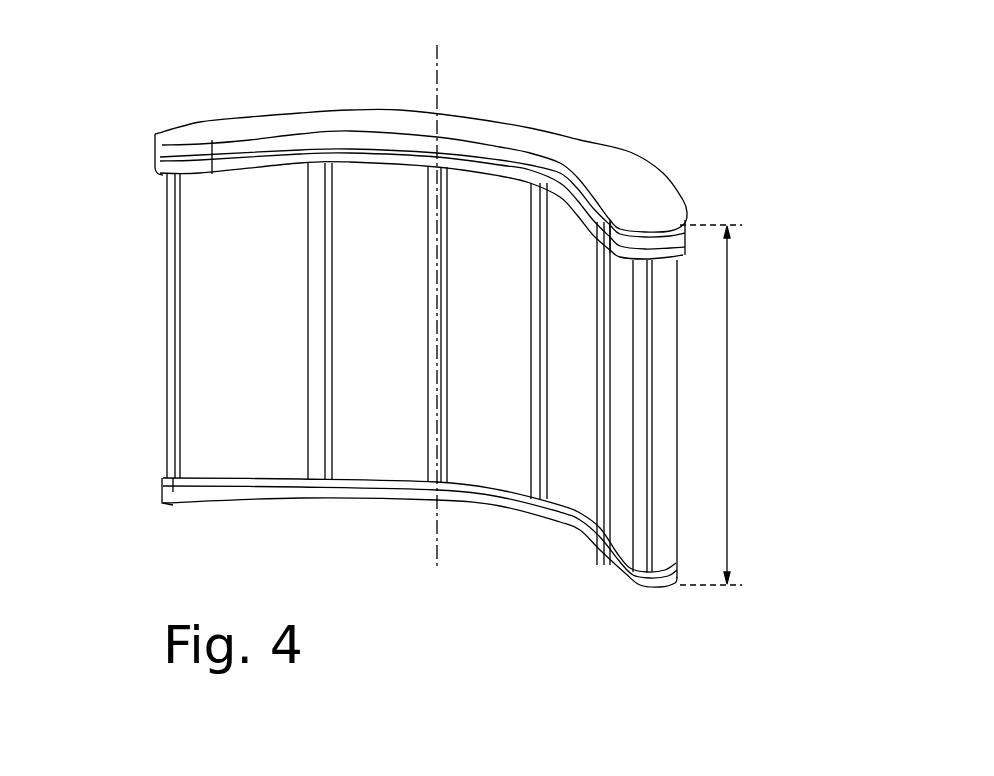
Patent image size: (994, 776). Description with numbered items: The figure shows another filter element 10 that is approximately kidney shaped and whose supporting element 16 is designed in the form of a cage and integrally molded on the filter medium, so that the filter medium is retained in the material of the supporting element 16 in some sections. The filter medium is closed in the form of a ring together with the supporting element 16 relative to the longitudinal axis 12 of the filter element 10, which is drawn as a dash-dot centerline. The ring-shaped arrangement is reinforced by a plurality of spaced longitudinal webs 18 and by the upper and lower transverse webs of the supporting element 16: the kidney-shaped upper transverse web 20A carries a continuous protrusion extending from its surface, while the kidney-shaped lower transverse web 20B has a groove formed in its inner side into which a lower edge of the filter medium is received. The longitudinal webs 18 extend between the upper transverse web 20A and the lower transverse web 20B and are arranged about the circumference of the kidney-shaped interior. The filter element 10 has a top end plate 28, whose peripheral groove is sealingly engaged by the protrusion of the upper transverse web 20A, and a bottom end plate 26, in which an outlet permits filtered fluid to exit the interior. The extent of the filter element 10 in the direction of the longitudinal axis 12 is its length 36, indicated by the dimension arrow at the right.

The filter element 10 is at (435, 314).
The longitudinal axis 12 is at (438, 562).
The supporting element 16 is at (374, 322).
The longitudinal webs 18 is at (168, 255).
The upper transverse web 20A is at (352, 158).
The lower transverse web 20B is at (367, 483).
The bottom end plate 26 is at (258, 500).
The top end plate 28 is at (573, 147).
The length of the filter element 36 is at (748, 408).